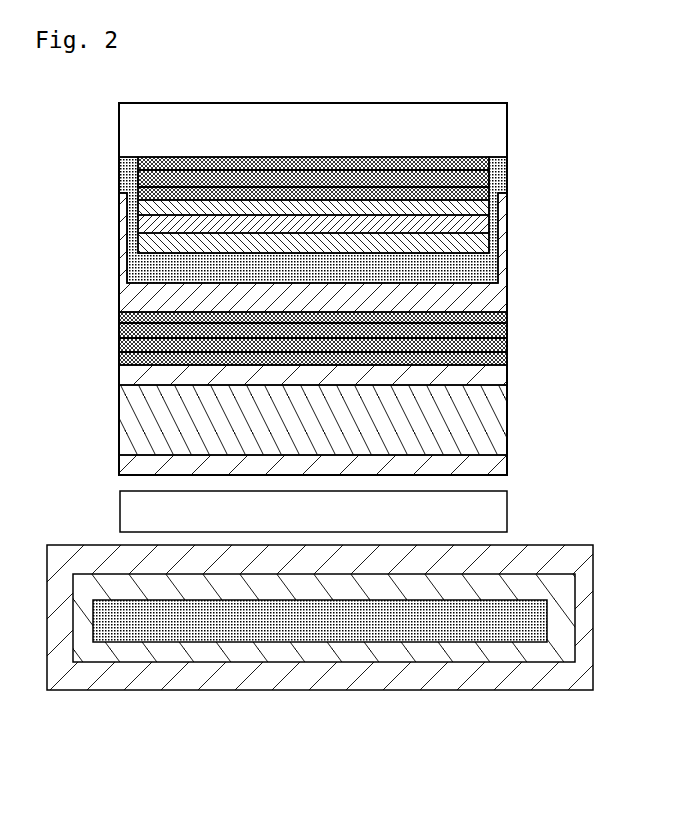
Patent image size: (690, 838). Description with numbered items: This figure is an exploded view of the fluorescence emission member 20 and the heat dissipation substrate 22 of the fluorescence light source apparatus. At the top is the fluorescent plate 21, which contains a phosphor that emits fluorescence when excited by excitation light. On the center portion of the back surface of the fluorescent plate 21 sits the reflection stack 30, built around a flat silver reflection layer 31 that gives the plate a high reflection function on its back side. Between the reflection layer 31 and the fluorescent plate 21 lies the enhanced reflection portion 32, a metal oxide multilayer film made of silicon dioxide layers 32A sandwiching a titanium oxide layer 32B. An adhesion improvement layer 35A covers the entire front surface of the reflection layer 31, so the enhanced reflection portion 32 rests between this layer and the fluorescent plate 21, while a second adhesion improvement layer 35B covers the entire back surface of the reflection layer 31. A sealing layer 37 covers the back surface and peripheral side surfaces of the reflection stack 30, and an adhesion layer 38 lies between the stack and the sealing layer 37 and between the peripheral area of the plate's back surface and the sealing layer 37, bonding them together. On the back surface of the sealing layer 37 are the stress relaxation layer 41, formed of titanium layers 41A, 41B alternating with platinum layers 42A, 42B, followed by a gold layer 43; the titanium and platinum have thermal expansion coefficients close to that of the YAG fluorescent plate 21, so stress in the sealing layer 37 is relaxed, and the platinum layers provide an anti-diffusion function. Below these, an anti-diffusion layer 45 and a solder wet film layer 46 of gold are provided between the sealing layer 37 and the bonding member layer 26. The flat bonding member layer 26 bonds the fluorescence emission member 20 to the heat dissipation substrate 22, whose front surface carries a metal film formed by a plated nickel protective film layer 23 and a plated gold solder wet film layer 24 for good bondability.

The fluorescence emission member 20 is at (398, 290).
The fluorescent plate 21 is at (497, 122).
The reflection stack 30 is at (388, 193).
The enhanced reflection portion 32 is at (368, 164).
The silicon dioxide layer 32A is at (486, 162).
The titanium oxide layer 32B is at (486, 178).
The adhesion improvement layer 35A is at (483, 208).
The reflection layer 31 is at (487, 227).
The adhesion improvement layer 35B is at (367, 245).
The adhesion layer 38 is at (473, 265).
The sealing layer 37 is at (497, 298).
The stress relaxation layer 41 is at (375, 350).
The titanium layer 41A is at (493, 318).
The platinum layer 42A is at (497, 330).
The titanium layer 41B is at (500, 347).
The platinum layer 42B is at (503, 358).
The gold layer 43 is at (503, 380).
The anti-diffusion layer 45 is at (495, 427).
The solder wet film layer 46 is at (371, 468).
The bonding member layer 26 is at (133, 503).
The solder wet film layer 24 is at (86, 551).
The protective film layer 23 is at (562, 595).
The heat dissipation substrate 22 is at (530, 620).